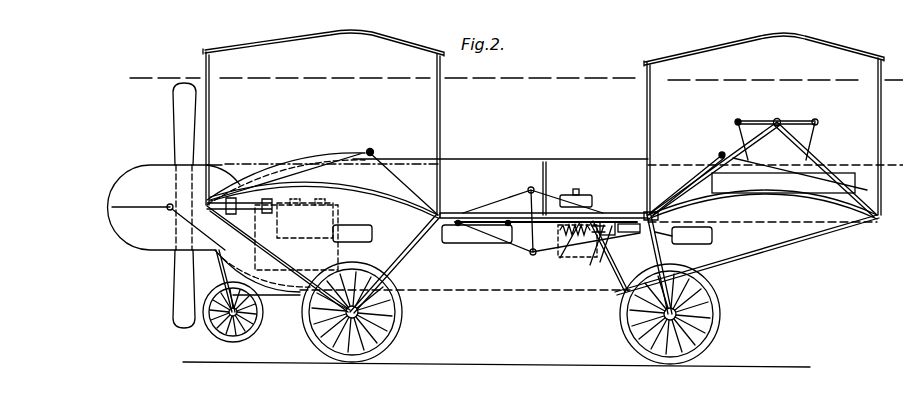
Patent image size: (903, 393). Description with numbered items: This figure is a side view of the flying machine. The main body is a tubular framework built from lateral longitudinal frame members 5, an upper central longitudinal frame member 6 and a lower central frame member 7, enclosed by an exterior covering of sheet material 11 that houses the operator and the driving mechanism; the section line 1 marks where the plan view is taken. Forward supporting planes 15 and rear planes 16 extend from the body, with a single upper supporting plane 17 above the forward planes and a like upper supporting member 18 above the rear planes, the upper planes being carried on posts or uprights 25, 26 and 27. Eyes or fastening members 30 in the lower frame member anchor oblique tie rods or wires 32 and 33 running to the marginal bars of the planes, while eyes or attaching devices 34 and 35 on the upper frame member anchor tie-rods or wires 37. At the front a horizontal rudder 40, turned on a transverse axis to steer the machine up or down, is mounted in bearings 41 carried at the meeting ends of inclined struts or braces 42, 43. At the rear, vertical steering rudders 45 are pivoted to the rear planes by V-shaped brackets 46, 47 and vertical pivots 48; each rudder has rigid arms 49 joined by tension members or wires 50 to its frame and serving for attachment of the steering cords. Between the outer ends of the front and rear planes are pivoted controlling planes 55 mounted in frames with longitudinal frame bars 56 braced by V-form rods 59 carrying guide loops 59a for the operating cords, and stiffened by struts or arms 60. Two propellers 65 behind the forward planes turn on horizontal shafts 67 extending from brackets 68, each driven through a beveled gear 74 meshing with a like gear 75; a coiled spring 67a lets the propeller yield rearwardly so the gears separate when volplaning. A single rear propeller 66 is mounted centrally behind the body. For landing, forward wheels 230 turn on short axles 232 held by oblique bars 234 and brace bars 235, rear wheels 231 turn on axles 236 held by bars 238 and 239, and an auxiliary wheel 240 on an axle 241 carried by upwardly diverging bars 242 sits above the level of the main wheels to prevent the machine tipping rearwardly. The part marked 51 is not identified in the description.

The section line 1 is at (118, 88).
The longitudinal laterally arranged frame members 5 is at (478, 212).
The upper central longitudinal frame member 6 is at (514, 159).
The lower central frame member 7 is at (523, 290).
The exterior covering of sheet material 11 is at (483, 272).
The forward supporting planes 15 is at (785, 195).
The rear supporting planes 16 is at (340, 187).
The upper supporting plane 17 is at (790, 40).
The upper supporting member 18 is at (346, 34).
The post or upright 25 is at (645, 92).
The post or upright 26 is at (438, 90).
The supporting post 27 is at (210, 99).
The eye or fastening member 30 is at (632, 313).
The tie rods or wires 32 is at (680, 252).
The tie rods or wires 33 is at (290, 268).
The eye or attaching device 34 is at (719, 152).
The eye or attaching device 35 is at (371, 149).
The tie-rods or wires 37 is at (350, 158).
The horizontal rudder 40 is at (800, 120).
The bearings 41 is at (775, 118).
The inclined strut or brace 42 is at (812, 168).
The inclined strut or brace 43 is at (748, 158).
The vertical steering rudder 45 is at (128, 183).
The V-shaped bracket 46 is at (238, 200).
The V-shaped bracket 47 is at (217, 250).
The vertical pivot 48 is at (272, 202).
The rigid arms 49 is at (168, 210).
The tension members or wires 50 is at (128, 210).
The skid 51 is at (266, 329).
The controlling plane 55 is at (508, 226).
The longitudinal frame bars 56 is at (772, 182).
The transversely arranged rods 59 is at (548, 198).
The guide loops or eyes 59a is at (546, 165).
The struts or arms 60 is at (530, 190).
The propeller 65 is at (596, 240).
The rear propeller 66 is at (176, 112).
The horizontal shaft 67 is at (608, 240).
The coiled spring 67a is at (558, 236).
The bracket 68 is at (662, 217).
The beveled gear 74 is at (612, 252).
The beveled gear 75 is at (683, 236).
The forward wheels 230 is at (715, 324).
The rear wheels 231 is at (395, 330).
The short axle 232 is at (702, 330).
The oblique bar 234 is at (700, 300).
The oblique brace bar 235 is at (570, 240).
The short axle 236 is at (336, 338).
The bar 238 is at (405, 252).
The bar 239 is at (296, 234).
The auxiliary wheel 240 is at (233, 326).
The short axle 241 is at (215, 328).
The upwardly diverging bars 242 is at (218, 272).